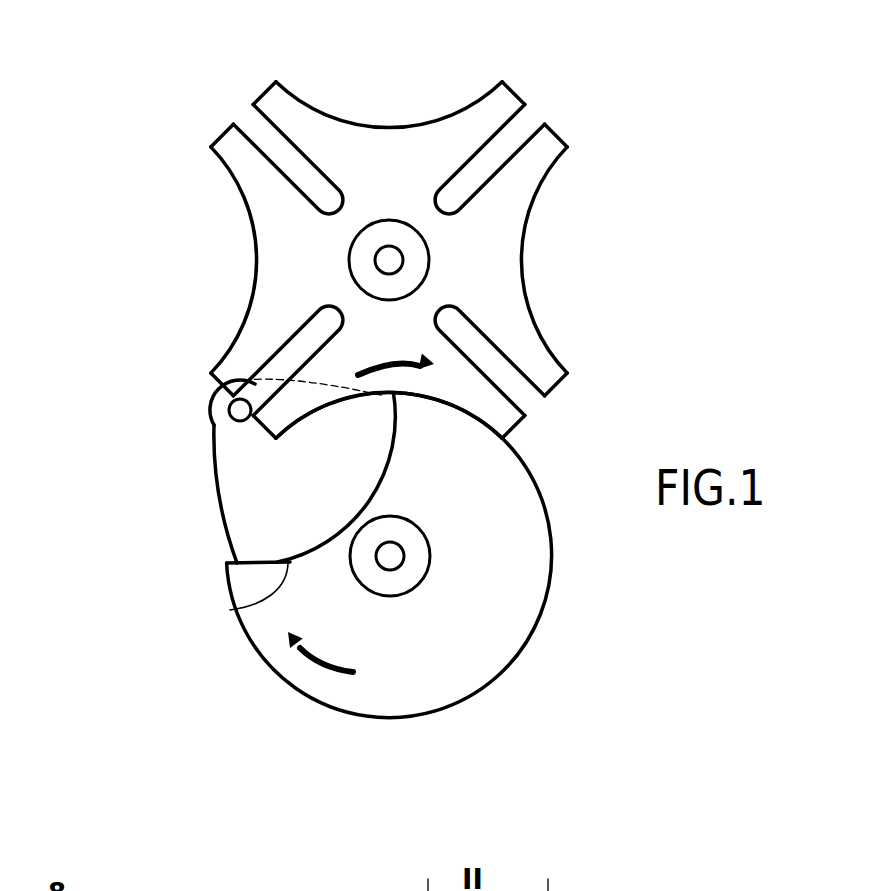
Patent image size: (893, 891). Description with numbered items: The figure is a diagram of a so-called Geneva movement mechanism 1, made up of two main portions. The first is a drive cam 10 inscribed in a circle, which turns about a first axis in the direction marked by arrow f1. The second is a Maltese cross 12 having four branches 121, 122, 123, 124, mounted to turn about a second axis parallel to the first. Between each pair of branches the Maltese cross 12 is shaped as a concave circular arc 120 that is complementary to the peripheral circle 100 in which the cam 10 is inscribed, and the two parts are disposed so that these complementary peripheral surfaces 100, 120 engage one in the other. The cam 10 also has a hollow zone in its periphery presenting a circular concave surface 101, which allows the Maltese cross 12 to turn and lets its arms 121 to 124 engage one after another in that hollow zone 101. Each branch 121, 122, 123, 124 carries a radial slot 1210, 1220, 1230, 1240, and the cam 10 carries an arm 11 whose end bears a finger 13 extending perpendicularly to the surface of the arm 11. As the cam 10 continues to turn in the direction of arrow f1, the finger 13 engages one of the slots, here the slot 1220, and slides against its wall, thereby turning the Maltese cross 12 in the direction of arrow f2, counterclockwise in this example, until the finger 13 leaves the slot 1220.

The Geneva movement mechanism 1 is at (150, 297).
The drive cam 10 is at (498, 548).
The peripheral circle 100 is at (423, 718).
The circular concave surface 101 is at (230, 610).
The arm 11 is at (262, 505).
The Maltese cross 12 is at (530, 159).
The circular arc 120 is at (390, 123).
The branch 121 is at (262, 98).
The radial slot 1210 is at (270, 137).
The branch 122 is at (256, 428).
The radial slot 1220 is at (298, 350).
The branch 123 is at (553, 380).
The radial slot 1230 is at (503, 363).
The branch 124 is at (508, 98).
The radial slot 1240 is at (530, 117).
The finger 13 is at (232, 414).
The arrow f1 is at (322, 646).
The arrow f2 is at (381, 362).